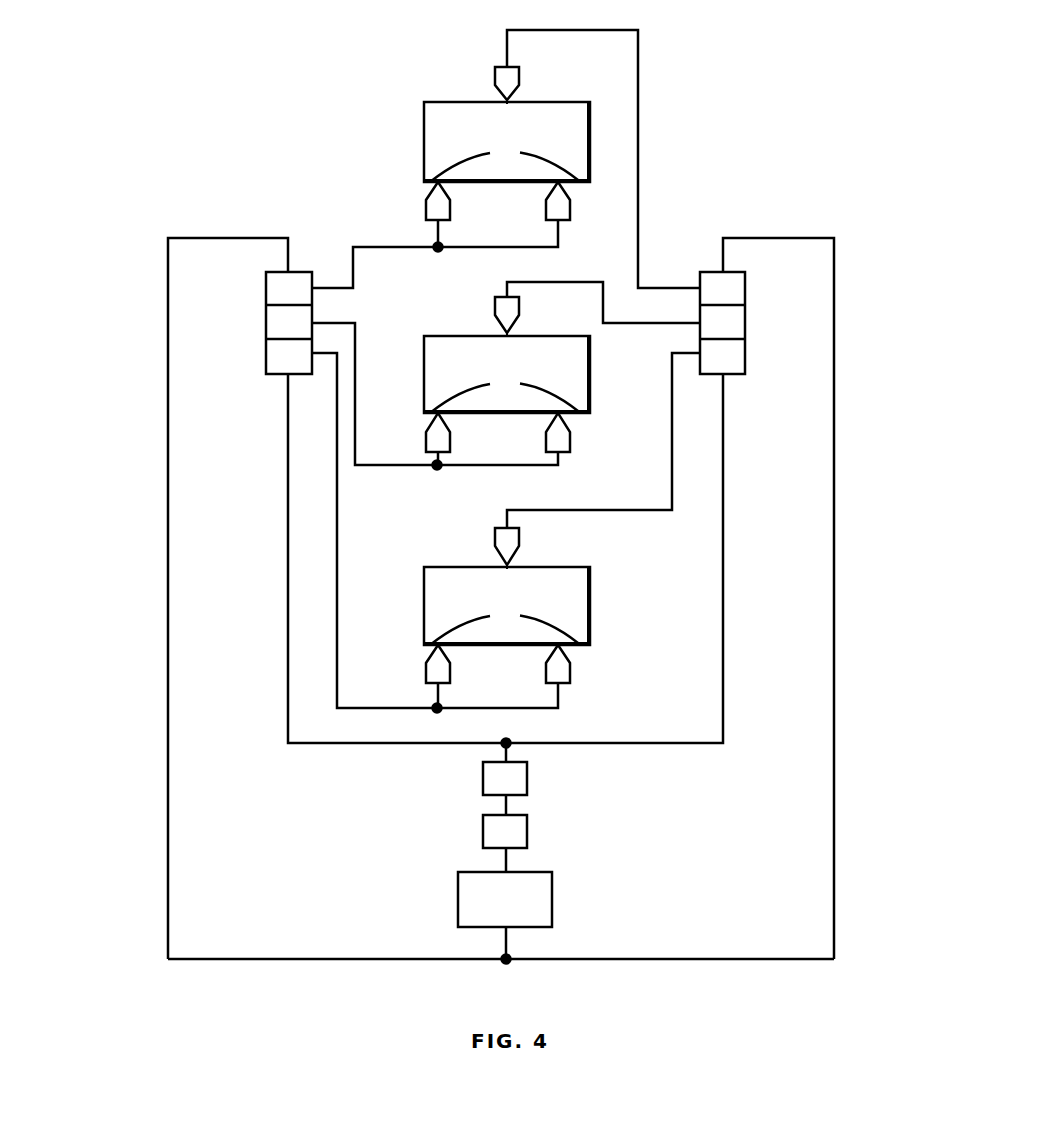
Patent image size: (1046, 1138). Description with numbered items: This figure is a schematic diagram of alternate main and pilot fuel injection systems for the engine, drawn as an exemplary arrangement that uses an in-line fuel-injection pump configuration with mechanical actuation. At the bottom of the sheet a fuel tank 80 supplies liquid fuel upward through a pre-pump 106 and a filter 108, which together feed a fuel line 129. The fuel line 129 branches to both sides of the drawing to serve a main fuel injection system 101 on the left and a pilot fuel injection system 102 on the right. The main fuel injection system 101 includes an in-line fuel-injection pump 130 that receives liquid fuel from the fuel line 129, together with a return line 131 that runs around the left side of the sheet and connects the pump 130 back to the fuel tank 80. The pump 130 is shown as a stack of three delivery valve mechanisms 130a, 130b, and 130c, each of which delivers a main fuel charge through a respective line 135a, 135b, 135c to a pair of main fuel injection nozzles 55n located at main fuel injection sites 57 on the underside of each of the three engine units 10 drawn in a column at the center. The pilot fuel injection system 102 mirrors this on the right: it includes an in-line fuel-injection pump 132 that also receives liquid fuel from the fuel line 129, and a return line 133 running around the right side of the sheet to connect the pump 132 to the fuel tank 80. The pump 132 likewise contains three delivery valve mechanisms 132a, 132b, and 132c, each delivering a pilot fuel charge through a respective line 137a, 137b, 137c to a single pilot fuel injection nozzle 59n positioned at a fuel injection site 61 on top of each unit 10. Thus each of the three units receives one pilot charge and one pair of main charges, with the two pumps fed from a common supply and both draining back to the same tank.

The engine cylinder assembly 10 is at (508, 64).
The main fuel injection sites 57 is at (504, 392).
The pilot fuel injection nozzle 59n is at (493, 78).
The fuel injection site 61 is at (505, 103).
The main fuel injection nozzles 55n is at (546, 212).
The fuel tank 80 is at (552, 886).
The pre-pump 106 is at (527, 836).
The filter 108 is at (527, 783).
The main fuel injection system 101 is at (130, 344).
The pilot fuel injection system 102 is at (866, 307).
The fuel line 129 is at (663, 743).
The in-line fuel-injection pump 130 is at (244, 372).
The delivery valve mechanism 130a is at (266, 356).
The delivery valve mechanism 130b is at (266, 324).
The delivery valve mechanism 130c is at (266, 290).
The return line 131 is at (168, 583).
The in-line fuel-injection pump 132 is at (764, 382).
The delivery valve mechanism 132a is at (745, 356).
The delivery valve mechanism 132b is at (745, 324).
The delivery valve mechanism 132c is at (745, 290).
The return line 133 is at (834, 600).
The line 135a is at (338, 623).
The line 135b is at (356, 348).
The line 135c is at (393, 245).
The line 137a is at (582, 510).
The line 137b is at (613, 325).
The line 137c is at (638, 135).